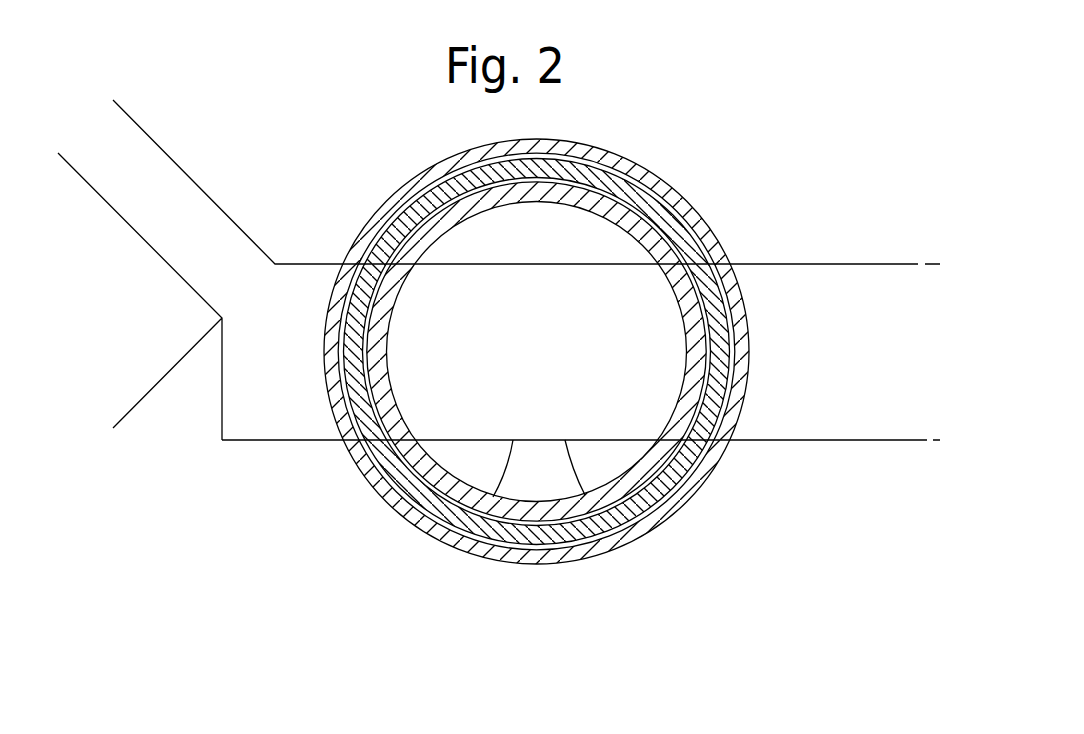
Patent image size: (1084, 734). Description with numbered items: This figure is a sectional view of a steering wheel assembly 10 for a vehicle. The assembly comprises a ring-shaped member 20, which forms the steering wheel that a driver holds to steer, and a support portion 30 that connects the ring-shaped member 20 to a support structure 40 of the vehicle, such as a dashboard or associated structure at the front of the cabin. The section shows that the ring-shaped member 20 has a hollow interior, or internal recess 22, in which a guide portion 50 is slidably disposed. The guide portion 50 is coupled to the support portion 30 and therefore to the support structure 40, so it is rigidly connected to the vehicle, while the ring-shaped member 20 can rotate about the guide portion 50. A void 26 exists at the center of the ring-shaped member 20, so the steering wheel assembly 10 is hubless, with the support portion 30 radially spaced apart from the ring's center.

The steering wheel assembly 10 is at (657, 553).
The ring-shaped member 20 is at (427, 522).
The internal recess 22 is at (488, 538).
The void 26 is at (483, 292).
The support portion 30 is at (532, 463).
The support structure 40 is at (622, 402).
The guide portion 50 is at (550, 535).